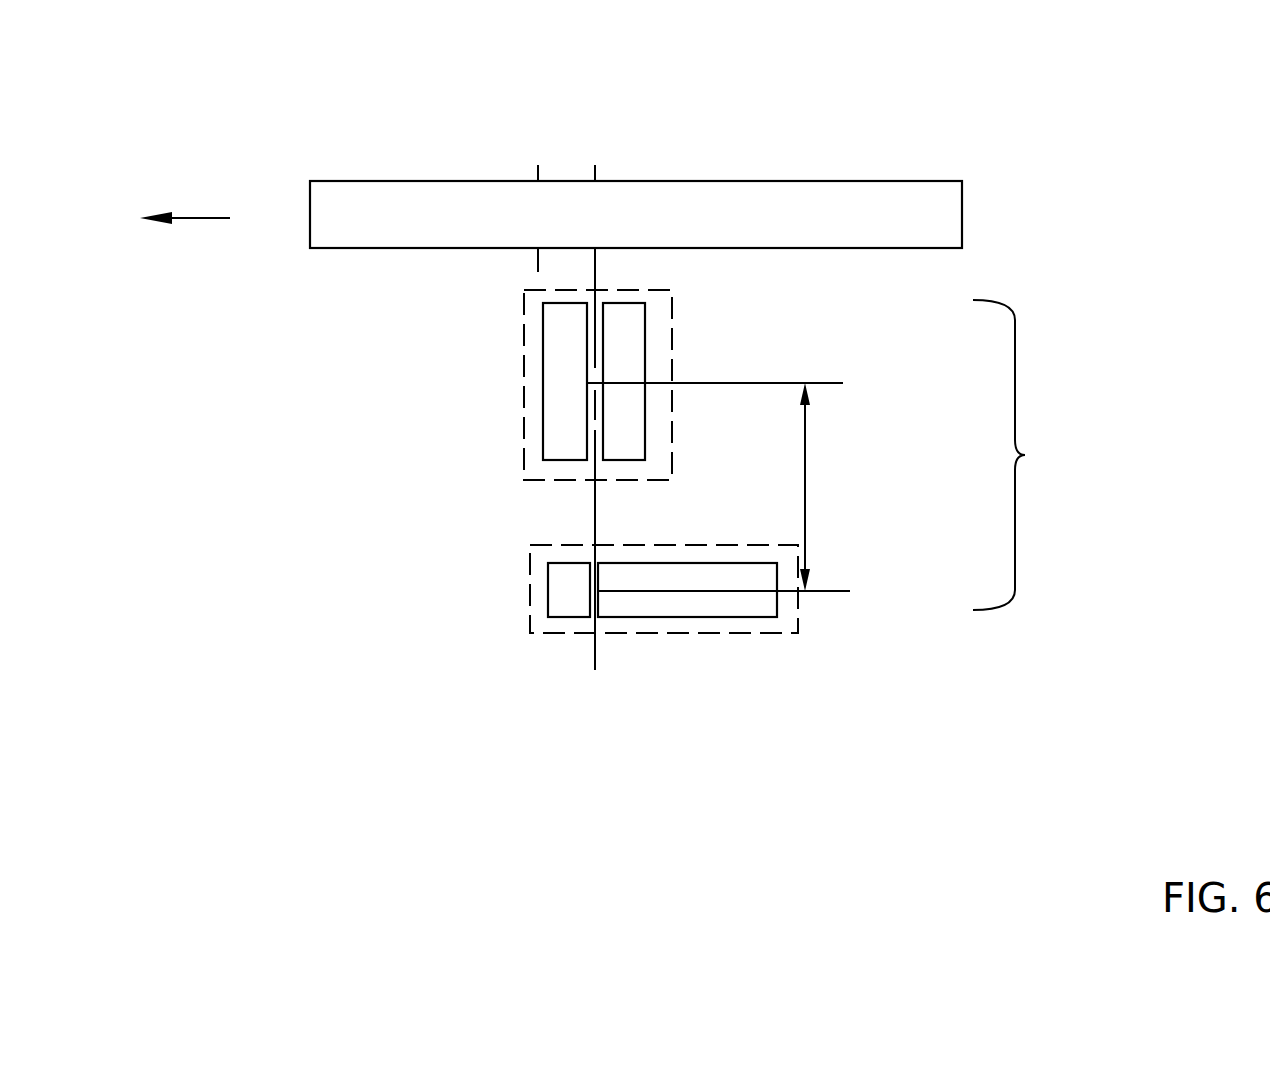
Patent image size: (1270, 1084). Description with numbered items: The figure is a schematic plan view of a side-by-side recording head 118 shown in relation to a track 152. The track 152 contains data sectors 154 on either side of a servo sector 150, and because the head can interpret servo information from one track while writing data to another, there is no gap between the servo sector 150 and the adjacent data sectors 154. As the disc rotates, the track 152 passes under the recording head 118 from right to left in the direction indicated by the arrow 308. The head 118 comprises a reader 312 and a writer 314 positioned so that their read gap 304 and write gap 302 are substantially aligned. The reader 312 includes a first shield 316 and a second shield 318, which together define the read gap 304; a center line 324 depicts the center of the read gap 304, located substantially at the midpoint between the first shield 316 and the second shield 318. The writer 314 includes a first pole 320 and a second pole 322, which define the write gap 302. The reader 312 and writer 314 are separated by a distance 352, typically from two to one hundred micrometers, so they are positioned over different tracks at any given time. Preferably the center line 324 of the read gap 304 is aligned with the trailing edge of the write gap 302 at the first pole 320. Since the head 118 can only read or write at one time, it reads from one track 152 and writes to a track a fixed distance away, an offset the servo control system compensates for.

The side-by-side recording head 118 is at (1031, 455).
The servo sector 150 is at (558, 172).
The track 152 is at (960, 208).
The data sector 154 is at (420, 180).
The write gap 302 is at (584, 557).
The read gap 304 is at (605, 296).
The arrow 308 is at (195, 218).
The reader 312 is at (522, 452).
The writer 314 is at (742, 648).
The first shield 316 is at (543, 342).
The second shield 318 is at (645, 352).
The first pole 320 is at (548, 593).
The second pole 322 is at (695, 563).
The center line 324 is at (595, 258).
The distance 352 is at (805, 492).